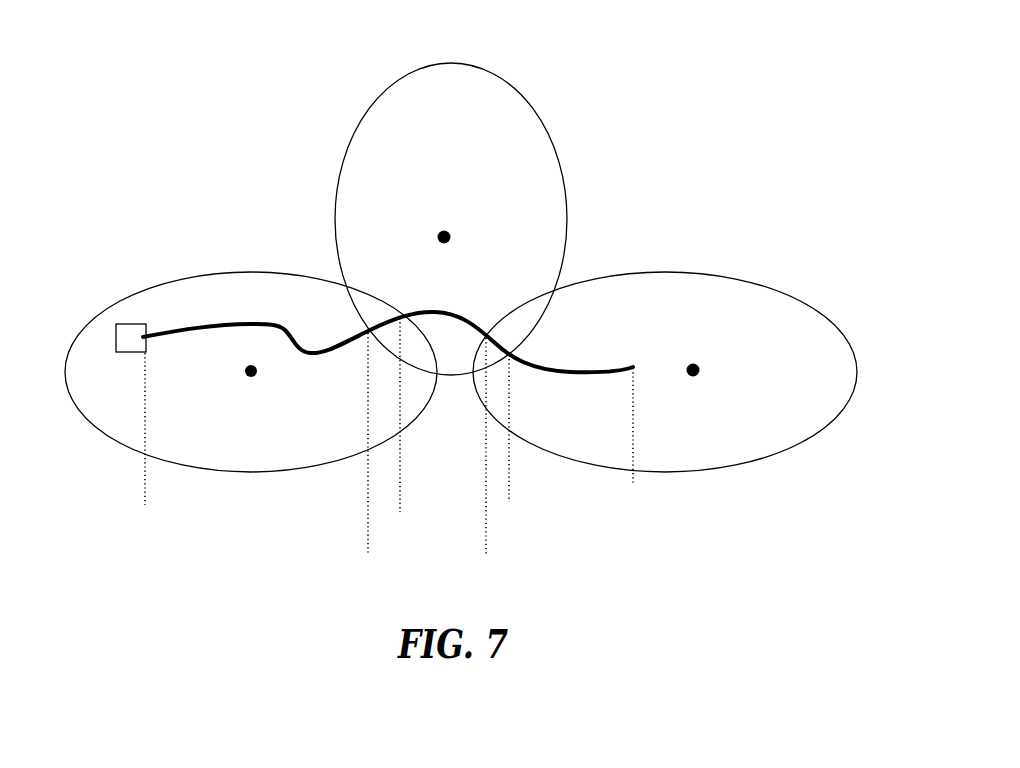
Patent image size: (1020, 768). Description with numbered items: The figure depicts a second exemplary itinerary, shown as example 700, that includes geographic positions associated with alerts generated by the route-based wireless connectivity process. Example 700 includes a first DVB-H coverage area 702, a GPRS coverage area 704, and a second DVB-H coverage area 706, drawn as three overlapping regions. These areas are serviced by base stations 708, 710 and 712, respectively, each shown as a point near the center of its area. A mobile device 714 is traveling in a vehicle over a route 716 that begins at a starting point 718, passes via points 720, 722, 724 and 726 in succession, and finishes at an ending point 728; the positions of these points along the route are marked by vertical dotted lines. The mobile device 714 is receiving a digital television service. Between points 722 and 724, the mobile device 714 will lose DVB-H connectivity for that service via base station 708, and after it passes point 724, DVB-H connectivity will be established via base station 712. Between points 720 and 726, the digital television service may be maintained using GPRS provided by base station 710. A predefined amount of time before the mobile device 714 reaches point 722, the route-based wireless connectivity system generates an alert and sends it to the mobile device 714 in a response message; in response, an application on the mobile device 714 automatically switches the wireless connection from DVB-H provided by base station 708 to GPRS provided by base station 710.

The example 700 is at (467, 47).
The first DVB-H coverage area 702 is at (265, 272).
The GPRS coverage area 704 is at (543, 140).
The second DVB-H coverage area 706 is at (772, 288).
The base station 708 is at (245, 377).
The base station 710 is at (452, 231).
The base station 712 is at (702, 365).
The mobile device 714 is at (133, 323).
The route 716 is at (285, 327).
The starting point 718 is at (146, 445).
The point 720 is at (368, 459).
The point 722 is at (403, 430).
The point 724 is at (486, 461).
The point 726 is at (516, 448).
The ending point 728 is at (638, 446).